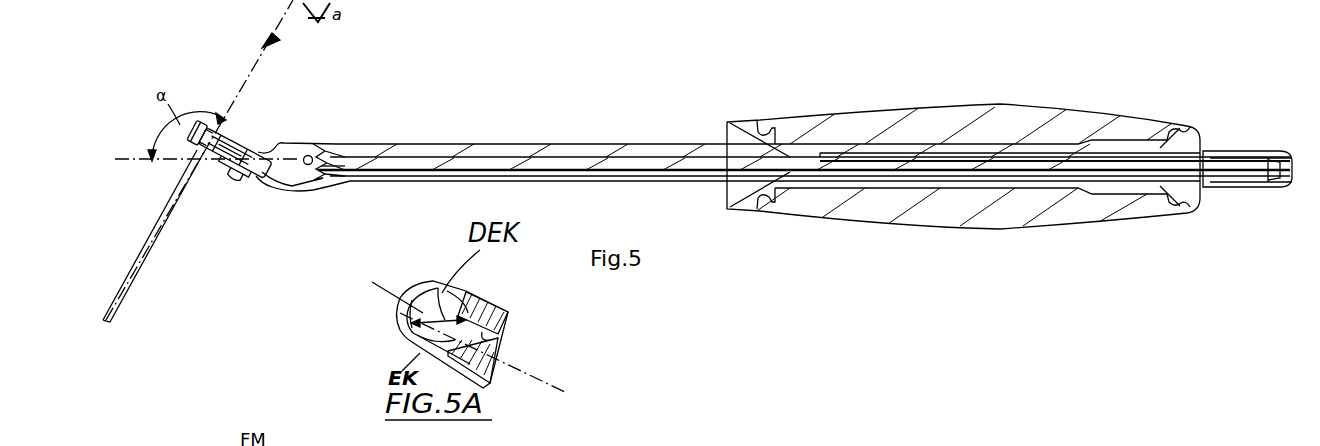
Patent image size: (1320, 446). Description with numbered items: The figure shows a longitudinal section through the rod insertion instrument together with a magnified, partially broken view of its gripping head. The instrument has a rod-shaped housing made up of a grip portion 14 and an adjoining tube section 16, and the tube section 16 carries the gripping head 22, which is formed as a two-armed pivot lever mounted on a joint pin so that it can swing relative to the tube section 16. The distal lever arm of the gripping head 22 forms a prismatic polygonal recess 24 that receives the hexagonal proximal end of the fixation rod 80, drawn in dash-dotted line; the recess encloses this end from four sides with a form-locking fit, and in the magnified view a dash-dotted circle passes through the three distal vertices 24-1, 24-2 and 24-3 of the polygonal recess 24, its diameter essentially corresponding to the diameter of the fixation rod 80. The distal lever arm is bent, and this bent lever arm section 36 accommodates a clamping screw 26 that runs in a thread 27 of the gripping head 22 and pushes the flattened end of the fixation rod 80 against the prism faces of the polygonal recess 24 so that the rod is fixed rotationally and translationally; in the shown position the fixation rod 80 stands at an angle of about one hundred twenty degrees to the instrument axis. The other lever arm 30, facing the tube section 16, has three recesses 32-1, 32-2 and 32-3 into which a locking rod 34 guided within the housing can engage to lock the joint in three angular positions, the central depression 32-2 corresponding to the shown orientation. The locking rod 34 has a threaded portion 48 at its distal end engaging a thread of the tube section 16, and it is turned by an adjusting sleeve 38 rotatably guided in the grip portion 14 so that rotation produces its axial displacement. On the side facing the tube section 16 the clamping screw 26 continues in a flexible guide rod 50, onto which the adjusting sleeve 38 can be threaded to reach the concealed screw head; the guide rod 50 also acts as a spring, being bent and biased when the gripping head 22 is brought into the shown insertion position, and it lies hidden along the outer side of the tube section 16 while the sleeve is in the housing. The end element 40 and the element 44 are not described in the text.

In FIG. 5, the grip portion 14 is at (1050, 148).
In FIG. 5, the tube section 16 is at (578, 150).
In FIG. 5, the gripping head 22 is at (297, 152).
In FIG. 5, the prismatic polygonal recess 24 is at (222, 140).
In FIG. 5A, the prismatic polygonal recess 24 is at (450, 312).
In FIG. 5, the clamping screw 26 is at (244, 150).
In FIG. 5A, the thread 27 is at (498, 340).
In FIG. 5, the lever arm 30 is at (315, 148).
In FIG. 5, the recess 32-1 is at (320, 154).
In FIG. 5, the central depression 32-2 is at (320, 170).
In FIG. 5, the recess 32-3 is at (320, 176).
In FIG. 5, the locking rod 34 is at (500, 167).
In FIG. 5, the bent lever arm section 36 is at (220, 166).
In FIG. 5, the adjusting sleeve 38 is at (1148, 158).
In FIG. 5, the knob 40 is at (1233, 186).
In FIG. 5, the actuating rod 44 is at (840, 158).
In FIG. 5, the threaded portion 48 is at (323, 164).
In FIG. 5, the flexible guide rod 50 is at (294, 192).
In FIG. 5, the fixation rod 80 is at (178, 205).
In FIG. 5A, the distal vertex 24-1 is at (405, 337).
In FIG. 5A, the distal vertex 24-2 is at (415, 310).
In FIG. 5A, the distal vertex 24-3 is at (433, 317).